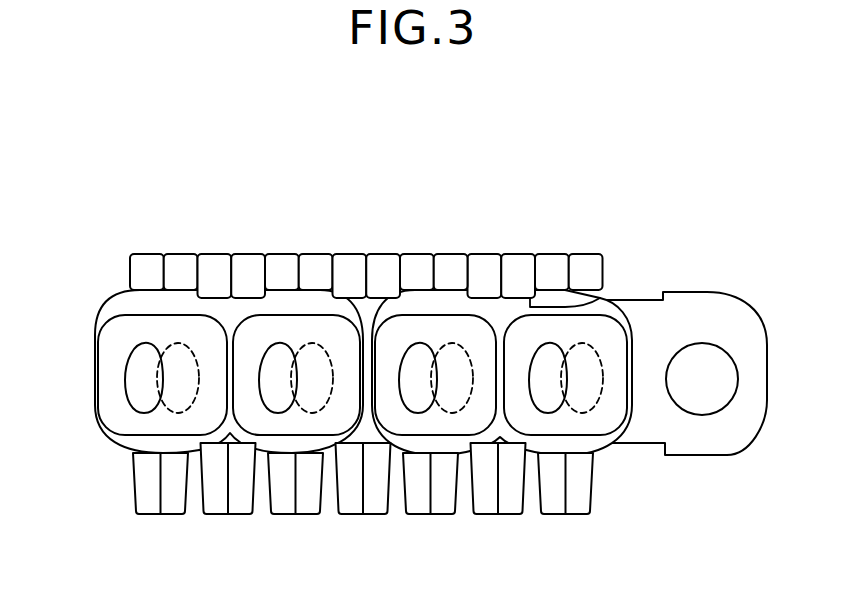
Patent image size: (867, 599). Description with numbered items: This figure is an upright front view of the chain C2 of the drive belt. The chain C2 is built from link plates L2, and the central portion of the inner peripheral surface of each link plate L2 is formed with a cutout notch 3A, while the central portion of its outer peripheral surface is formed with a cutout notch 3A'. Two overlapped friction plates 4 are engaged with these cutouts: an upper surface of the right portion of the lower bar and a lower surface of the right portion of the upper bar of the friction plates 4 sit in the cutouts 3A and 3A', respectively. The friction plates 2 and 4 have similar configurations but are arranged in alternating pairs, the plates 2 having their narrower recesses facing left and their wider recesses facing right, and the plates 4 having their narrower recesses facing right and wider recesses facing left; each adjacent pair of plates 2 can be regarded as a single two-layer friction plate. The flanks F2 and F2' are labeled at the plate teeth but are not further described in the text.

The link plate L2 is at (122, 300).
The chain C2 is at (727, 297).
The cutout notch 3A is at (517, 498).
The cutout notch 3A' is at (591, 287).
The tooth flank F2 is at (363, 495).
The tooth flank F2' is at (313, 298).
The friction plate 4 is at (393, 251).
The friction plate 2 is at (460, 251).